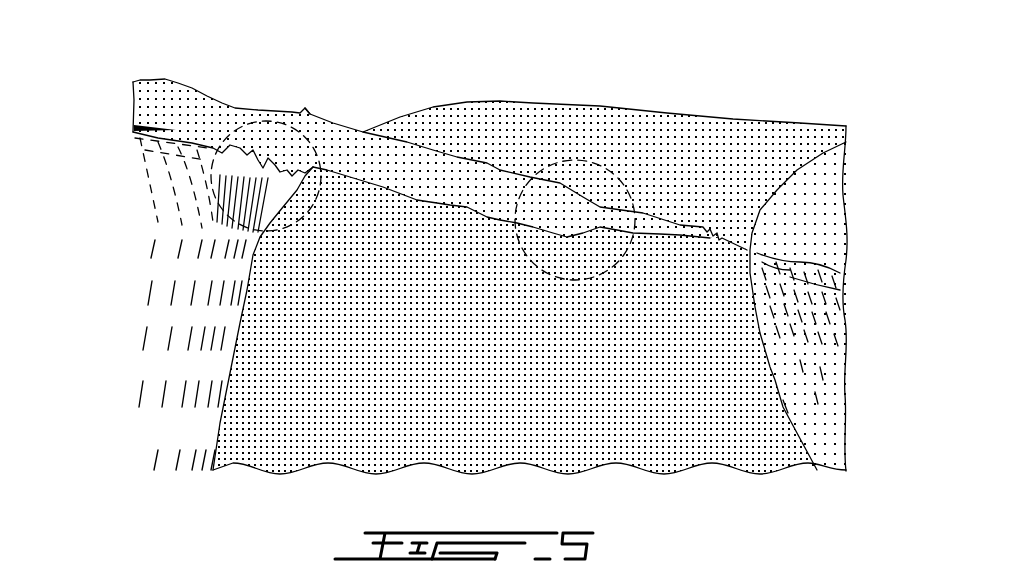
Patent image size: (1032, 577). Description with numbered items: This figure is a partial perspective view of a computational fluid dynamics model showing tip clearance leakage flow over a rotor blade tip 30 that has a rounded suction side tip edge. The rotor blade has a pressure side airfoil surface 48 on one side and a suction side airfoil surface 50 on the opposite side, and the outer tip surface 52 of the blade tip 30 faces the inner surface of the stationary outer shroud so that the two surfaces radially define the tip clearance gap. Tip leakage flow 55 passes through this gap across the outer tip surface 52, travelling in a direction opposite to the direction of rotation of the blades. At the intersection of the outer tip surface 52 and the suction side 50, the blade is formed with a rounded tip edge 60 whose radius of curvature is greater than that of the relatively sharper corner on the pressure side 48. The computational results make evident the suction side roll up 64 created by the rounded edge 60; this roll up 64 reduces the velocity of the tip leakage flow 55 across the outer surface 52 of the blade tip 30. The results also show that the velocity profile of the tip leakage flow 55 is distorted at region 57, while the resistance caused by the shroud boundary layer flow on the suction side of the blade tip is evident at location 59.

The blade tip 30 is at (739, 152).
The pressure side airfoil surface 48 is at (793, 376).
The suction side airfoil surface 50 is at (222, 325).
The outer tip surface 52 is at (552, 376).
The tip leakage flow 55 is at (414, 152).
The region of distorted velocity profile 57 is at (637, 173).
The shroud boundary layer flow resistance 59 is at (217, 111).
The rounded tip edge 60 is at (278, 174).
The suction side roll up 64 is at (197, 198).